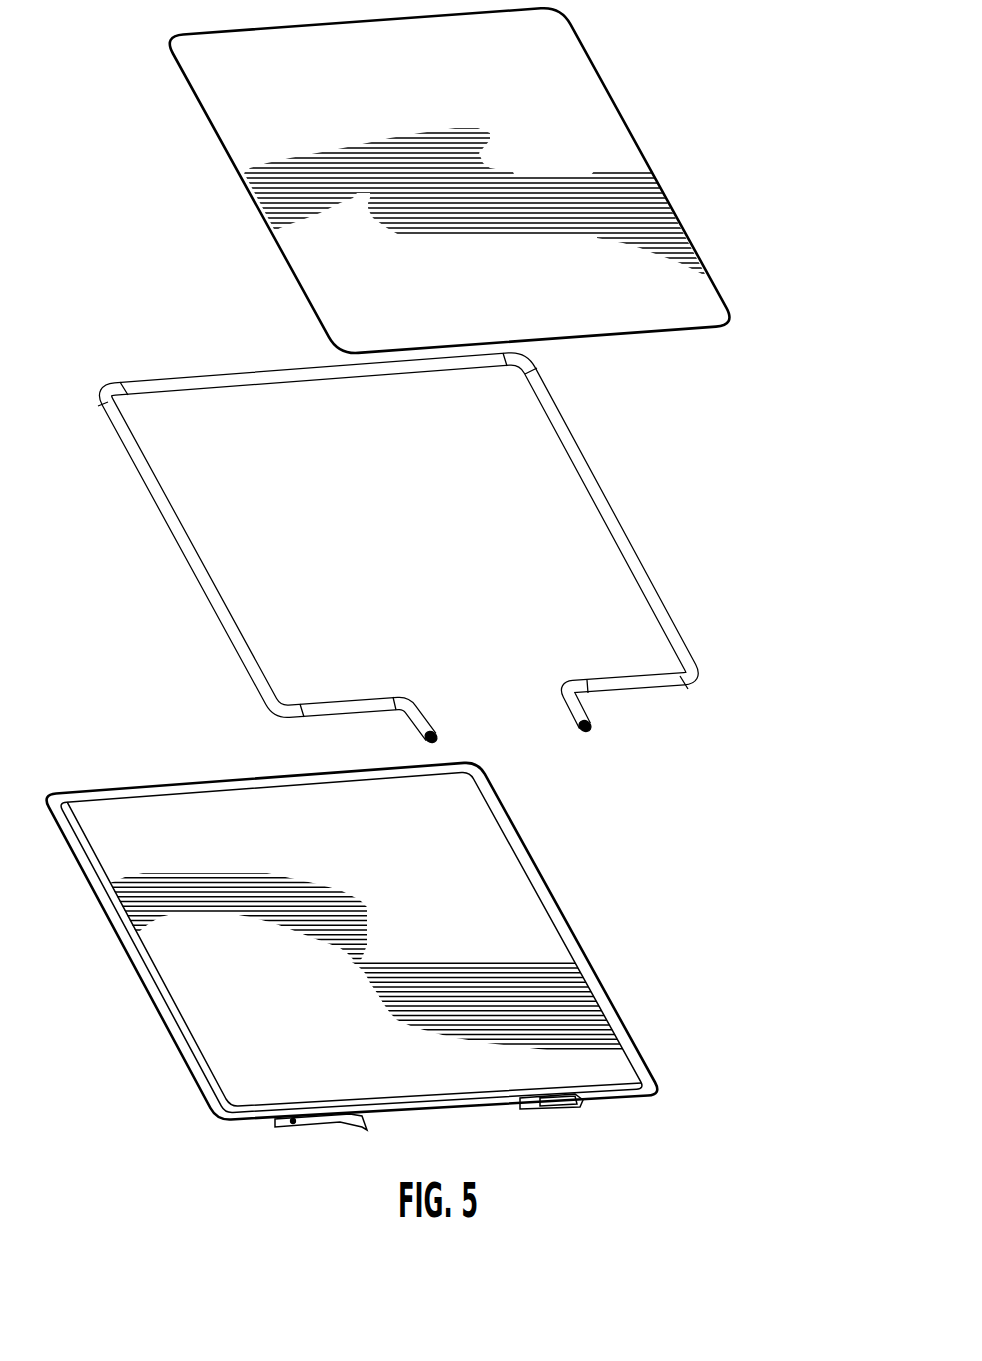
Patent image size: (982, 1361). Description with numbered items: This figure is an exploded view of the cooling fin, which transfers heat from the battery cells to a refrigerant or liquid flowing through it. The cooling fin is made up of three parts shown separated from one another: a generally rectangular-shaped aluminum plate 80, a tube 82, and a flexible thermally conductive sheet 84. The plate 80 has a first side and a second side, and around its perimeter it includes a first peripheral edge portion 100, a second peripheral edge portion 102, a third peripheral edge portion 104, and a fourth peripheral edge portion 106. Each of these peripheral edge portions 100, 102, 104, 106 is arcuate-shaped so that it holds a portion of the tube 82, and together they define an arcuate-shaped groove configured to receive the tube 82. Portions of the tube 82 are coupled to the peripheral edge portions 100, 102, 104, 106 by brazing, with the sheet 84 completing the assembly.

The rectangular-shaped aluminum plate 80 is at (495, 900).
The tube 82 is at (637, 567).
The flexible thermally conductive sheet 84 is at (603, 116).
The first peripheral edge portion 100 is at (573, 941).
The second peripheral edge portion 102 is at (191, 787).
The third peripheral edge portion 104 is at (132, 946).
The fourth peripheral edge portion 106 is at (427, 1106).